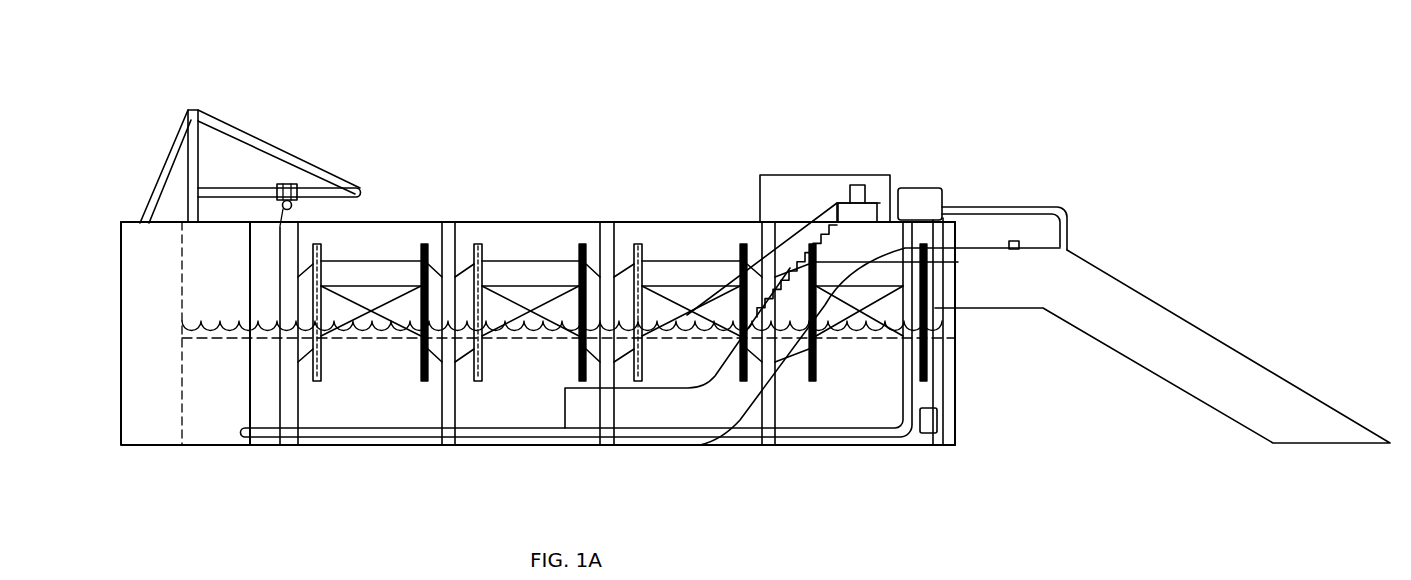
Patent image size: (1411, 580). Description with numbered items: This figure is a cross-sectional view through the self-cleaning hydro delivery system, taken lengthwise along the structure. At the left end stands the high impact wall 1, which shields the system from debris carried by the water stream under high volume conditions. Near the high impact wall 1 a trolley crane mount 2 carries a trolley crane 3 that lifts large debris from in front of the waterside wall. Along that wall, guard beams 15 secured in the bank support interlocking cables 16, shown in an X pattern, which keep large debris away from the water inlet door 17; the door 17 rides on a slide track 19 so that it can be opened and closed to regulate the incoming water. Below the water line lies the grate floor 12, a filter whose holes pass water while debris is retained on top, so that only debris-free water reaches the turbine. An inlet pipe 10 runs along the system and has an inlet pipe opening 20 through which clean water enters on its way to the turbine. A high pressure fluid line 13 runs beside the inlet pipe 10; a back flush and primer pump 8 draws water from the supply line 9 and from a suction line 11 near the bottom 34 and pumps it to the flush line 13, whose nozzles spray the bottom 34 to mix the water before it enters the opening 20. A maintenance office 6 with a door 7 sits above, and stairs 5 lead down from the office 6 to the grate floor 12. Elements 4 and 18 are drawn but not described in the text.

The high impact wall 1 is at (120, 222).
The trolley crane mount 2 is at (188, 112).
The trolley crane 3 is at (288, 188).
The tank cover 4 is at (518, 222).
The stairs 5 is at (782, 290).
The maintenance office 6 is at (826, 175).
The door 7 is at (863, 185).
The back flush and primer pump 8 is at (930, 188).
The supply line 9 is at (1049, 205).
The inlet pipe 10 is at (1160, 332).
The suction line 11 is at (928, 433).
The grate floor 12 is at (280, 345).
The high pressure fluid line 13 is at (466, 433).
The guard beams 15 is at (782, 290).
The interlocking cables 16 is at (508, 305).
The water inlet door 17 is at (553, 305).
The outlet valve 18 is at (1015, 250).
The slide track 19 is at (424, 383).
The inlet pipe opening 20 is at (665, 418).
The bottom 34 is at (838, 450).